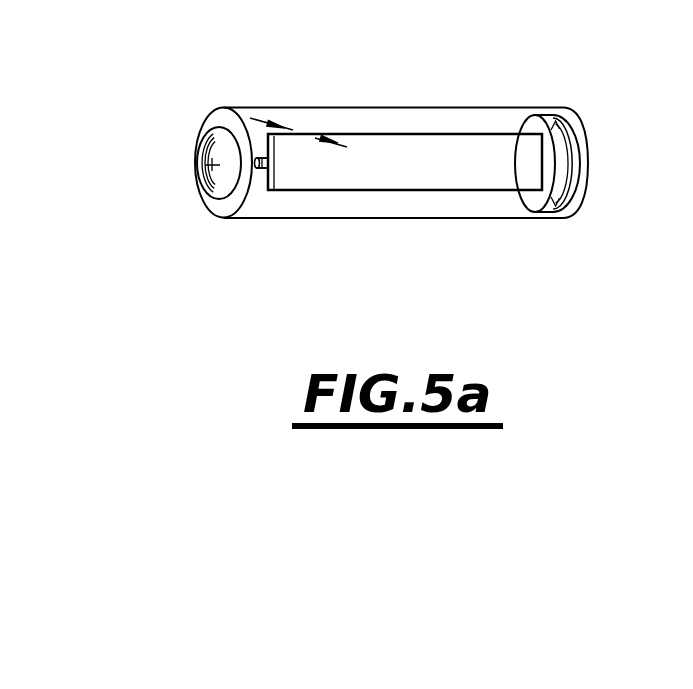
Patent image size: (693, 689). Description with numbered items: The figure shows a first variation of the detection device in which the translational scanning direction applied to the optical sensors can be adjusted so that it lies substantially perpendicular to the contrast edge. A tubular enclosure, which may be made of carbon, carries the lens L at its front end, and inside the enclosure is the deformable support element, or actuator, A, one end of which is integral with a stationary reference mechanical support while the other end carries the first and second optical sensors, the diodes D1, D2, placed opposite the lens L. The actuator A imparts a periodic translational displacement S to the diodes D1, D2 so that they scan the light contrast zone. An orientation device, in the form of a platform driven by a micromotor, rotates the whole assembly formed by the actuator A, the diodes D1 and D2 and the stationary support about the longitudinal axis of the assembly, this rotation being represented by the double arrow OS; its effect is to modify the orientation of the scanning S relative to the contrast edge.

The lens L is at (212, 165).
The periodic translational displacement direction S is at (293, 130).
The deformable support element A is at (450, 152).
The first optical sensor D1 is at (266, 168).
The second optical sensor D2 is at (274, 220).
The rotation OS is at (575, 166).